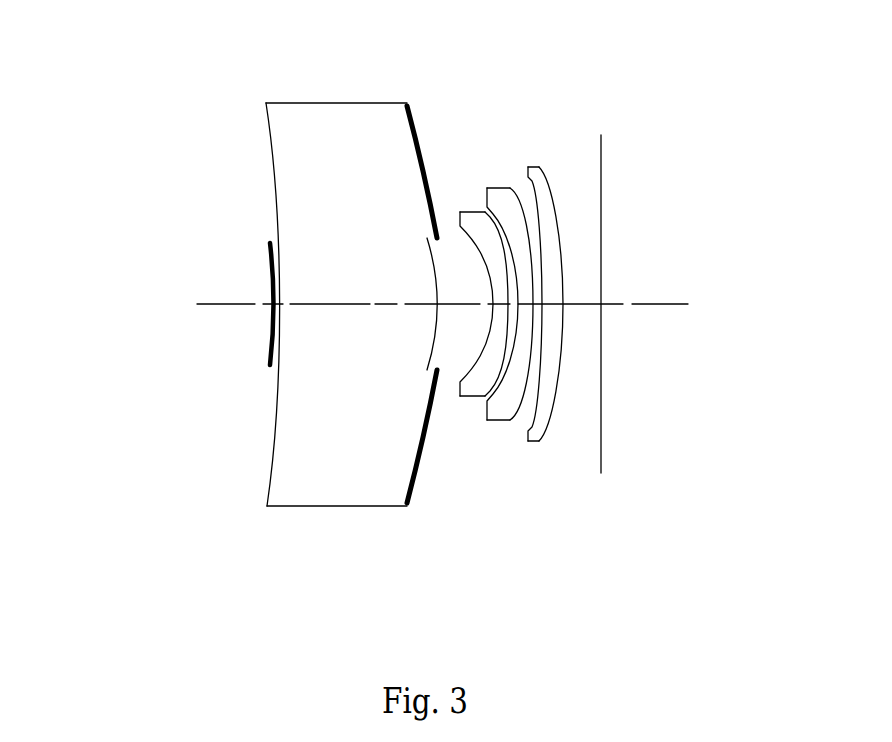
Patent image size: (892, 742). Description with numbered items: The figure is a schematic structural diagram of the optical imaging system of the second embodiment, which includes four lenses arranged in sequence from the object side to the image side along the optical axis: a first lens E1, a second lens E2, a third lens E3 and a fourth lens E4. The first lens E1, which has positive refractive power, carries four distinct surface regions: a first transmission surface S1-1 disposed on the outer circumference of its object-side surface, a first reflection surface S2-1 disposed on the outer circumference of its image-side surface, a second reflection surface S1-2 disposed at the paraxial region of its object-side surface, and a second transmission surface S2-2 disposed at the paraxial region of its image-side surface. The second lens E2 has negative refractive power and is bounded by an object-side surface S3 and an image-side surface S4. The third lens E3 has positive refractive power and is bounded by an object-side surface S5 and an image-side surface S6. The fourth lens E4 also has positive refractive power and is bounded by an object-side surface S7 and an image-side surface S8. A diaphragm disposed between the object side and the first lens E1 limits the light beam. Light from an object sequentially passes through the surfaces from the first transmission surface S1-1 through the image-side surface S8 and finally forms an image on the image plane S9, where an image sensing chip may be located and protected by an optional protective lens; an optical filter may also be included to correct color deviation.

The first lens E1 is at (235, 329).
The second lens E2 is at (439, 329).
The third lens E3 is at (521, 329).
The fourth lens E4 is at (614, 329).
The first transmission surface S1-1 is at (277, 430).
The second reflection surface S1-2 is at (273, 306).
The first reflection surface S2-1 is at (437, 370).
The second transmission surface S2-2 is at (437, 305).
The object-side surface of the second lens S3 is at (493, 305).
The image-side surface of the second lens S4 is at (508, 305).
The object-side surface of the third lens S5 is at (520, 305).
The image-side surface of the third lens S6 is at (533, 305).
The object-side surface of the fourth lens S7 is at (541, 305).
The image-side surface of the fourth lens S8 is at (563, 305).
The image plane S9 is at (602, 305).